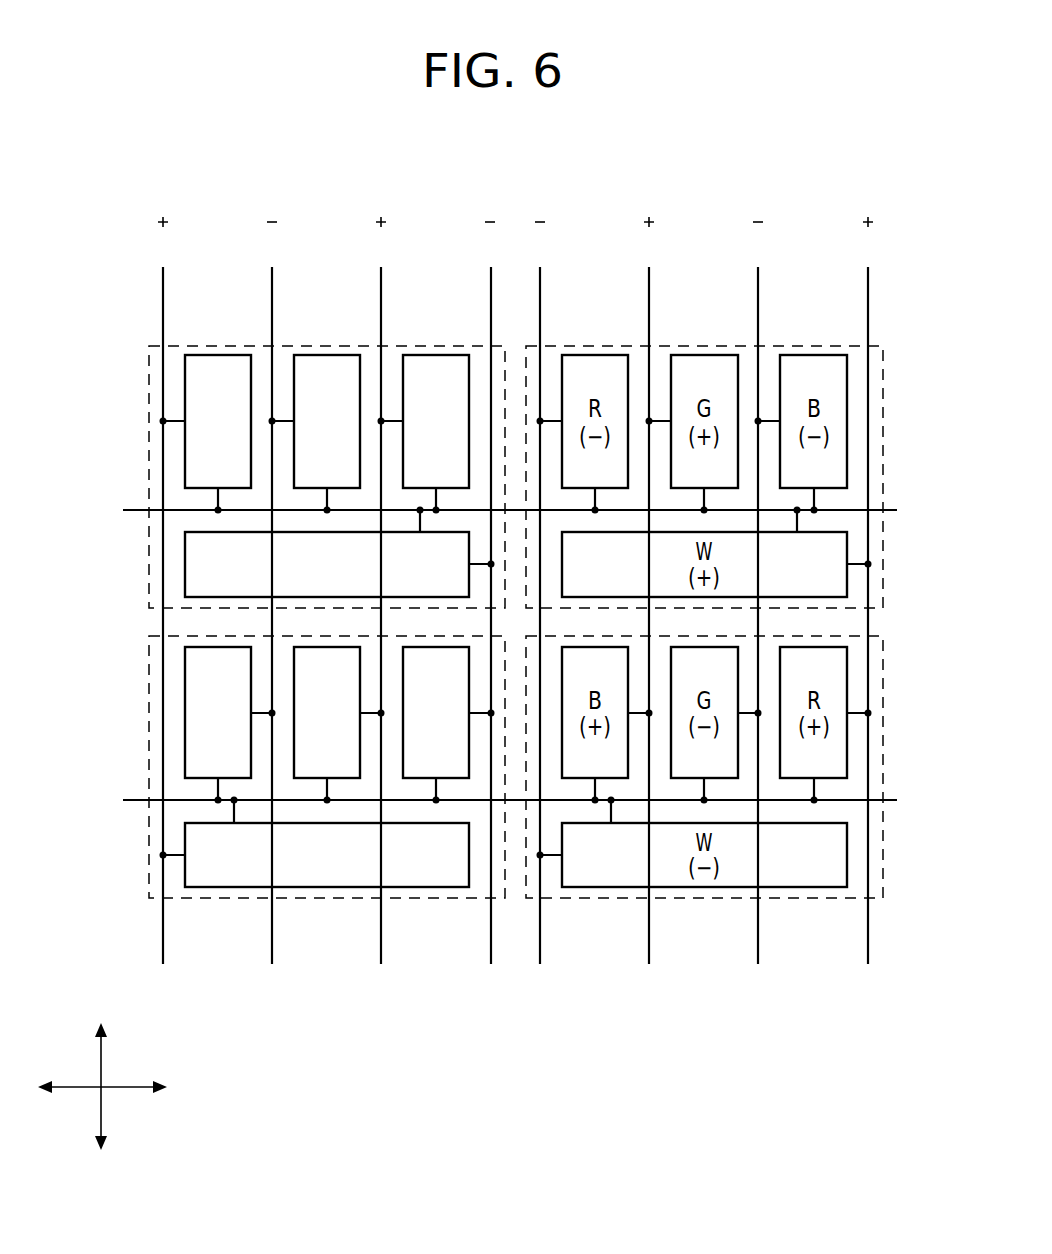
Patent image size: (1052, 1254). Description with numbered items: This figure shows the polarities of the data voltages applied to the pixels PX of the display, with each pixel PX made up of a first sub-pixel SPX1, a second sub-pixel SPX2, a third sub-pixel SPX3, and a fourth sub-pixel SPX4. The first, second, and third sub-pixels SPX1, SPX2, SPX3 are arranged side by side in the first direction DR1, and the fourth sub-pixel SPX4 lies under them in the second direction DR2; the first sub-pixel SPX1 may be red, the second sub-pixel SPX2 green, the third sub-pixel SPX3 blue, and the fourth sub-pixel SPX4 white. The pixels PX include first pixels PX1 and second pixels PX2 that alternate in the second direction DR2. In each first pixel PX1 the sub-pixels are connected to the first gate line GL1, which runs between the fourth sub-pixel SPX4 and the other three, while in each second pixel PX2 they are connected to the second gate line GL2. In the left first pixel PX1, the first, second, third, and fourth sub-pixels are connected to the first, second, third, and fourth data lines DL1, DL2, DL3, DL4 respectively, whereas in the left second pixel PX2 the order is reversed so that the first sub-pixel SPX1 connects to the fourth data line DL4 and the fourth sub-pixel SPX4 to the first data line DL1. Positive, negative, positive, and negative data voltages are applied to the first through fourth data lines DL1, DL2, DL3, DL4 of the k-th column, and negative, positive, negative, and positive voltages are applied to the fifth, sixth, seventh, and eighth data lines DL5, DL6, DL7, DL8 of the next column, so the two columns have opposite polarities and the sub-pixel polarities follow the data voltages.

The first data line DL1 is at (162, 602).
The second data line DL2 is at (271, 602).
The third data line DL3 is at (380, 602).
The fourth data line DL4 is at (490, 602).
The fifth data line DL5 is at (539, 602).
The sixth data line DL6 is at (649, 602).
The seventh data line DL7 is at (758, 602).
The eighth data line DL8 is at (868, 602).
The first gate line GL1 is at (487, 511).
The second gate line GL2 is at (487, 801).
The pixel PX is at (78, 568).
The first pixel PX1 is at (149, 578).
The second pixel PX2 is at (149, 663).
The first sub-pixel SPX1 is at (215, 354).
The second sub-pixel SPX2 is at (324, 354).
The third sub-pixel SPX3 is at (433, 354).
The fourth sub-pixel SPX4 is at (185, 547).
The first direction DR1 is at (120, 1088).
The second direction DR2 is at (101, 1073).